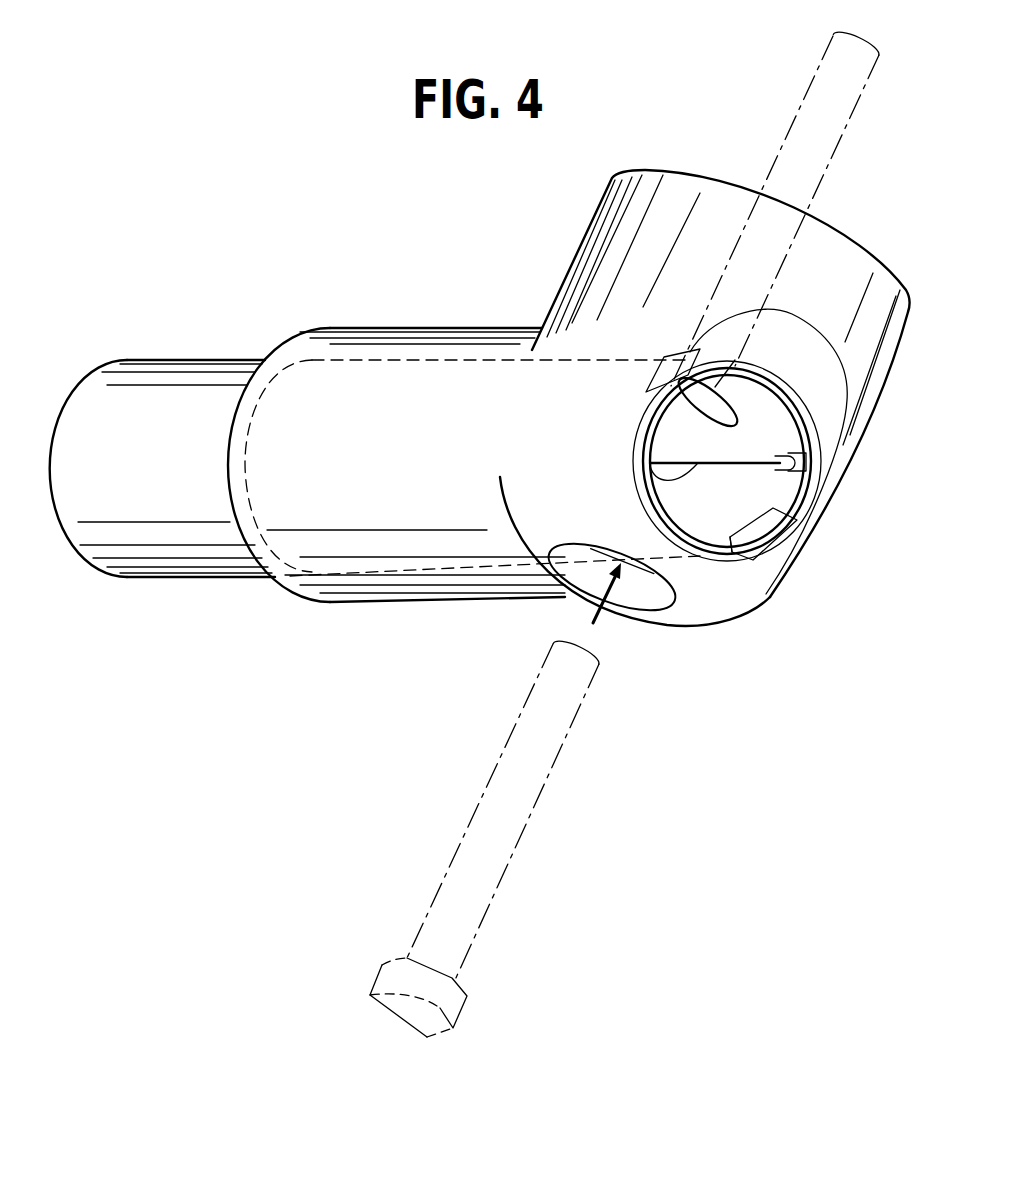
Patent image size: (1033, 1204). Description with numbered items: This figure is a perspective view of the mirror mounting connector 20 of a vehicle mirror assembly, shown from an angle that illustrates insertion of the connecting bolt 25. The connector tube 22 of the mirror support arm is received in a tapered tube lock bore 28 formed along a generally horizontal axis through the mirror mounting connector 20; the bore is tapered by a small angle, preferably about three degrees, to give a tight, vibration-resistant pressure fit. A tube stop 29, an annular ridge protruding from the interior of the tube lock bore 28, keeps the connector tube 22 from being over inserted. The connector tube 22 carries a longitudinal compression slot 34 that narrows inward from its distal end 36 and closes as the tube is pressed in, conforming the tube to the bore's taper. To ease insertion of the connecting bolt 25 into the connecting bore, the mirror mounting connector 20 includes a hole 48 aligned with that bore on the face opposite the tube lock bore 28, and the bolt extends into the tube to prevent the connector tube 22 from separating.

The mirror mounting connector 20 is at (600, 224).
The connector tube 22 is at (236, 367).
The connecting bolt 25 is at (790, 265).
The tube lock bore 28 is at (486, 344).
The tube stop 29 is at (757, 535).
The compression slot 34 is at (652, 472).
The distal end 36 is at (793, 431).
The hole 48 is at (636, 596).